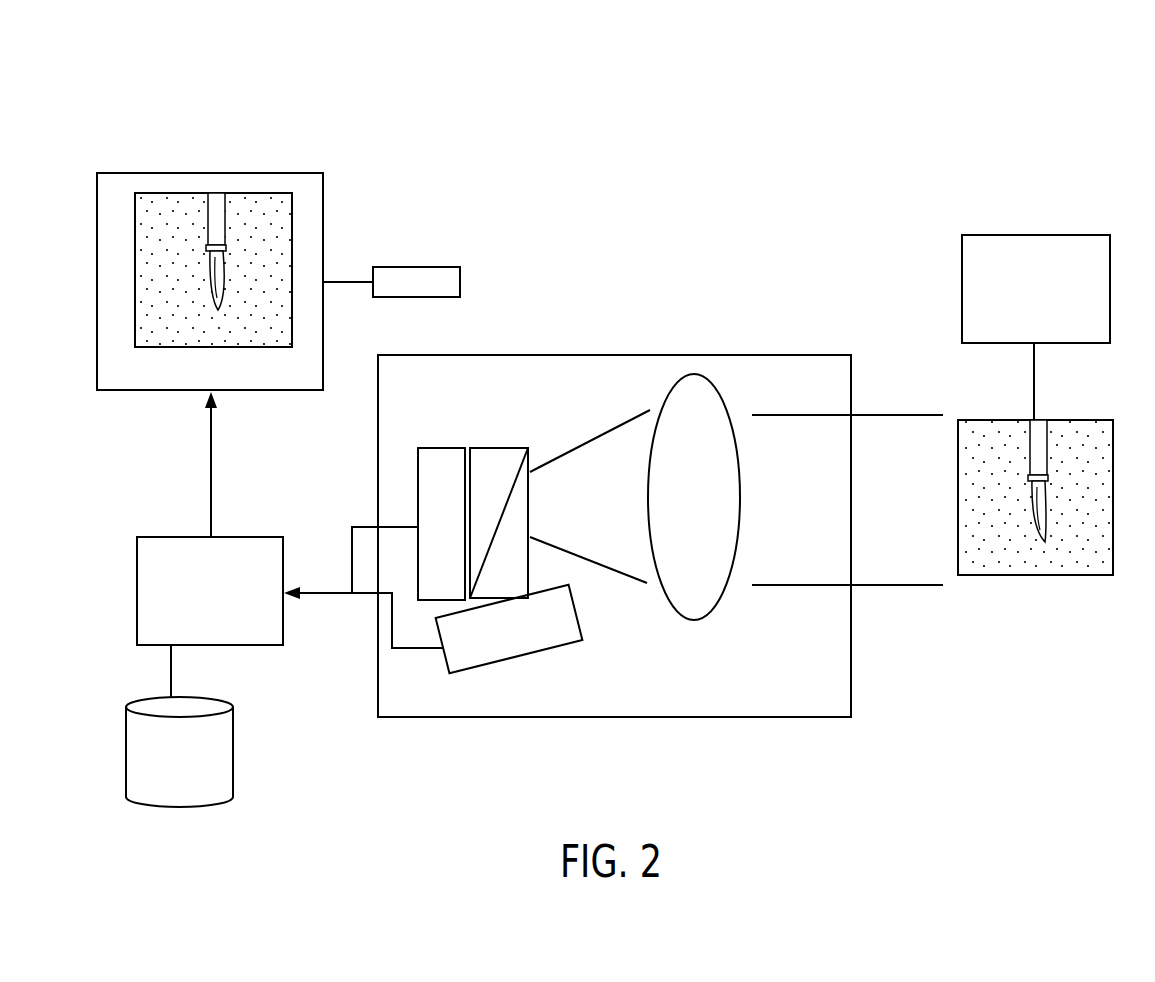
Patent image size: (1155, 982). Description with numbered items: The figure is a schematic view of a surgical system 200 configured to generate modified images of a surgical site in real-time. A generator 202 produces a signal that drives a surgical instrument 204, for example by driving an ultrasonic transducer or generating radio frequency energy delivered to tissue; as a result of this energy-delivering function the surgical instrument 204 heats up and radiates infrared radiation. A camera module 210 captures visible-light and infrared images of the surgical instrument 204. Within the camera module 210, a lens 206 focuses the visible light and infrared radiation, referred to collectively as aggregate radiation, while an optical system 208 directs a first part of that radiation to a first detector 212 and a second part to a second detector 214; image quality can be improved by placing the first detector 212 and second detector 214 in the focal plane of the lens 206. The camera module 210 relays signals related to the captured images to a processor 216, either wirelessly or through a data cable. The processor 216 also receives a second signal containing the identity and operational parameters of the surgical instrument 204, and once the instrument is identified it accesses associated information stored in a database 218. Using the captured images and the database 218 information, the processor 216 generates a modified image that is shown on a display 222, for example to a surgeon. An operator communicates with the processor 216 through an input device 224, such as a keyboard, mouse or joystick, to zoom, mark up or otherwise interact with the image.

The surgical system 200 is at (624, 108).
The generator 202 is at (962, 263).
The surgical instrument 204 is at (972, 463).
The lens 206 is at (668, 397).
The optical system 208 is at (530, 515).
The camera module 210 is at (733, 318).
The first detector 212 is at (583, 632).
The second detector 214 is at (441, 448).
The processor 216 is at (160, 537).
The database 218 is at (126, 741).
The display 222 is at (228, 172).
The input device 224 is at (421, 267).